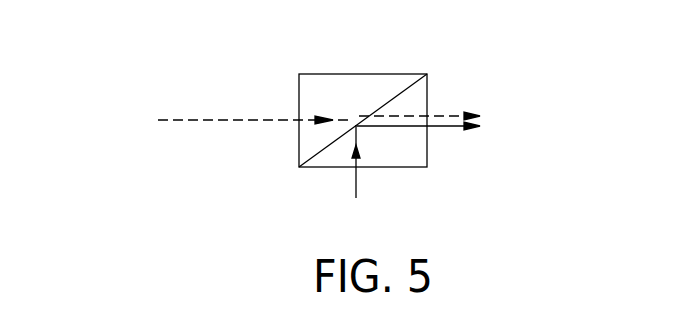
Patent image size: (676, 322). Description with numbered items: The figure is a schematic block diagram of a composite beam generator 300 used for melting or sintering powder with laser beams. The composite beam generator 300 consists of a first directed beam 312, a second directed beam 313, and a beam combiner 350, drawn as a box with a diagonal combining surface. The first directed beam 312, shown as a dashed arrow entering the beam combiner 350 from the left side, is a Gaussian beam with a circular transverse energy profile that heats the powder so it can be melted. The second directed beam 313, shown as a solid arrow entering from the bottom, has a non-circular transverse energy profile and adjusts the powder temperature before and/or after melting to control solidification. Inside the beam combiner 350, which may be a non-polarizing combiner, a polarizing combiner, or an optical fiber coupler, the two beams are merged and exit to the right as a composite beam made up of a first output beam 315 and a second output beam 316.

The composite beam generator 300 is at (123, 33).
The first directed beam 312 is at (277, 120).
The second directed beam 313 is at (355, 183).
The first output beam 315 is at (445, 115).
The second output beam 316 is at (445, 130).
The beam combiner 350 is at (362, 73).